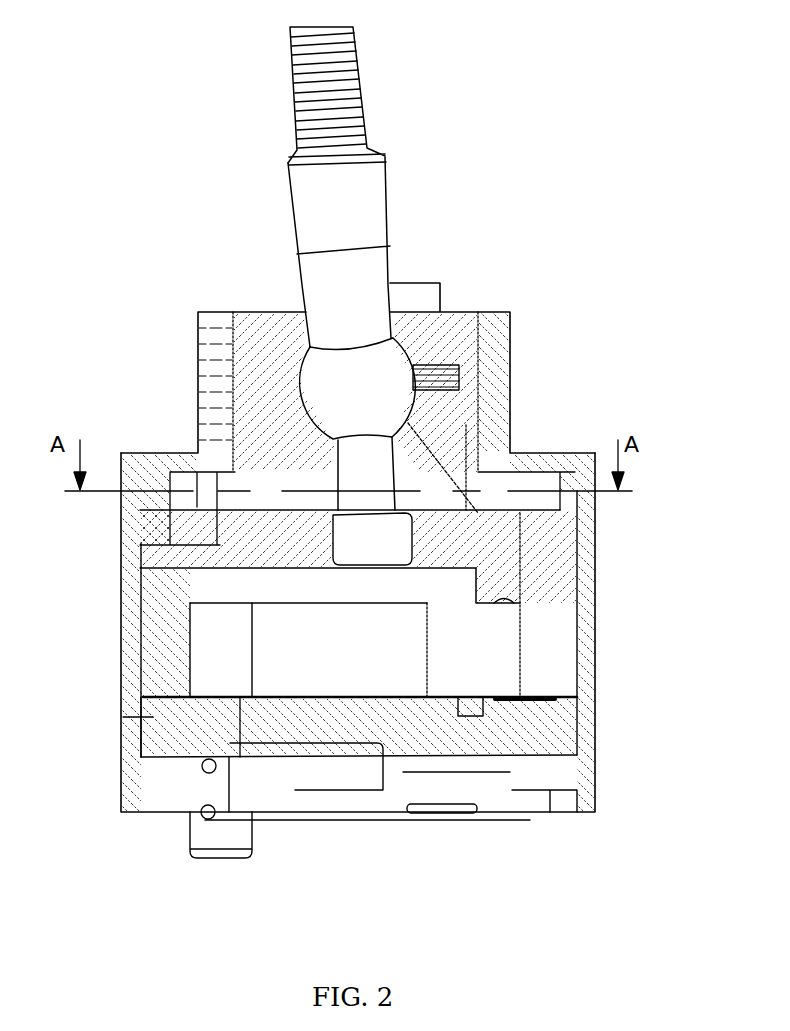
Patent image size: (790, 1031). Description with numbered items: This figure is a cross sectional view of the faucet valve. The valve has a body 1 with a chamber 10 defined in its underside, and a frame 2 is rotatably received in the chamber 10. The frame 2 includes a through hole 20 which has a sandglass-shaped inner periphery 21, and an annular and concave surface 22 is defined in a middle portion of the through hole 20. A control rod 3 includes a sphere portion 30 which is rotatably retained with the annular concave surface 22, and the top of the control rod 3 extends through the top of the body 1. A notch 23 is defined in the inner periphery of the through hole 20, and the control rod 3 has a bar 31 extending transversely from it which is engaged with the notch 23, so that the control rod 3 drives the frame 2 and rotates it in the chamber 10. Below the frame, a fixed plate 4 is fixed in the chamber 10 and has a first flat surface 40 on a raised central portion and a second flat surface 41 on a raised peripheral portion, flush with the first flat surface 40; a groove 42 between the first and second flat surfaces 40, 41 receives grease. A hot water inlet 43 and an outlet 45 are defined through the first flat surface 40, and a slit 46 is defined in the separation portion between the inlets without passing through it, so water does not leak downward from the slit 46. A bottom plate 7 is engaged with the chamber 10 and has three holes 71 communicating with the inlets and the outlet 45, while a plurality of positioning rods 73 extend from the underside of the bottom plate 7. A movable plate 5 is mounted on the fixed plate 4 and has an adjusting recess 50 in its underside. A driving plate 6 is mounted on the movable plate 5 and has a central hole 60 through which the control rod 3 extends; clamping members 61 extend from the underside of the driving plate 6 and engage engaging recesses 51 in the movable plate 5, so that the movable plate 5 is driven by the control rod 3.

The body 1 is at (587, 613).
The frame 2 is at (258, 312).
The control rod 3 is at (375, 193).
The fixed plate 4 is at (127, 717).
The movable plate 5 is at (517, 675).
The driving plate 6 is at (598, 562).
The bottom plate 7 is at (590, 782).
The chamber 10 is at (557, 668).
The through hole 20 is at (397, 360).
The sandglass-shaped inner periphery 21 is at (417, 467).
The annular concave surface 22 is at (315, 386).
The notch 23 is at (448, 418).
The sphere portion 30 is at (395, 362).
The bar 31 is at (442, 375).
The first flat surface 40 is at (210, 690).
The second flat surface 41 is at (140, 688).
The groove 42 is at (165, 695).
The hot water inlet 43 is at (478, 705).
The outlet 45 is at (283, 822).
The slit 46 is at (422, 825).
The adjusting recess 50 is at (233, 620).
The engaging recesses 51 is at (520, 603).
The central hole 60 is at (145, 511).
The clamping members 61 is at (508, 590).
The holes 71 is at (365, 827).
The positioning rods 73 is at (202, 835).